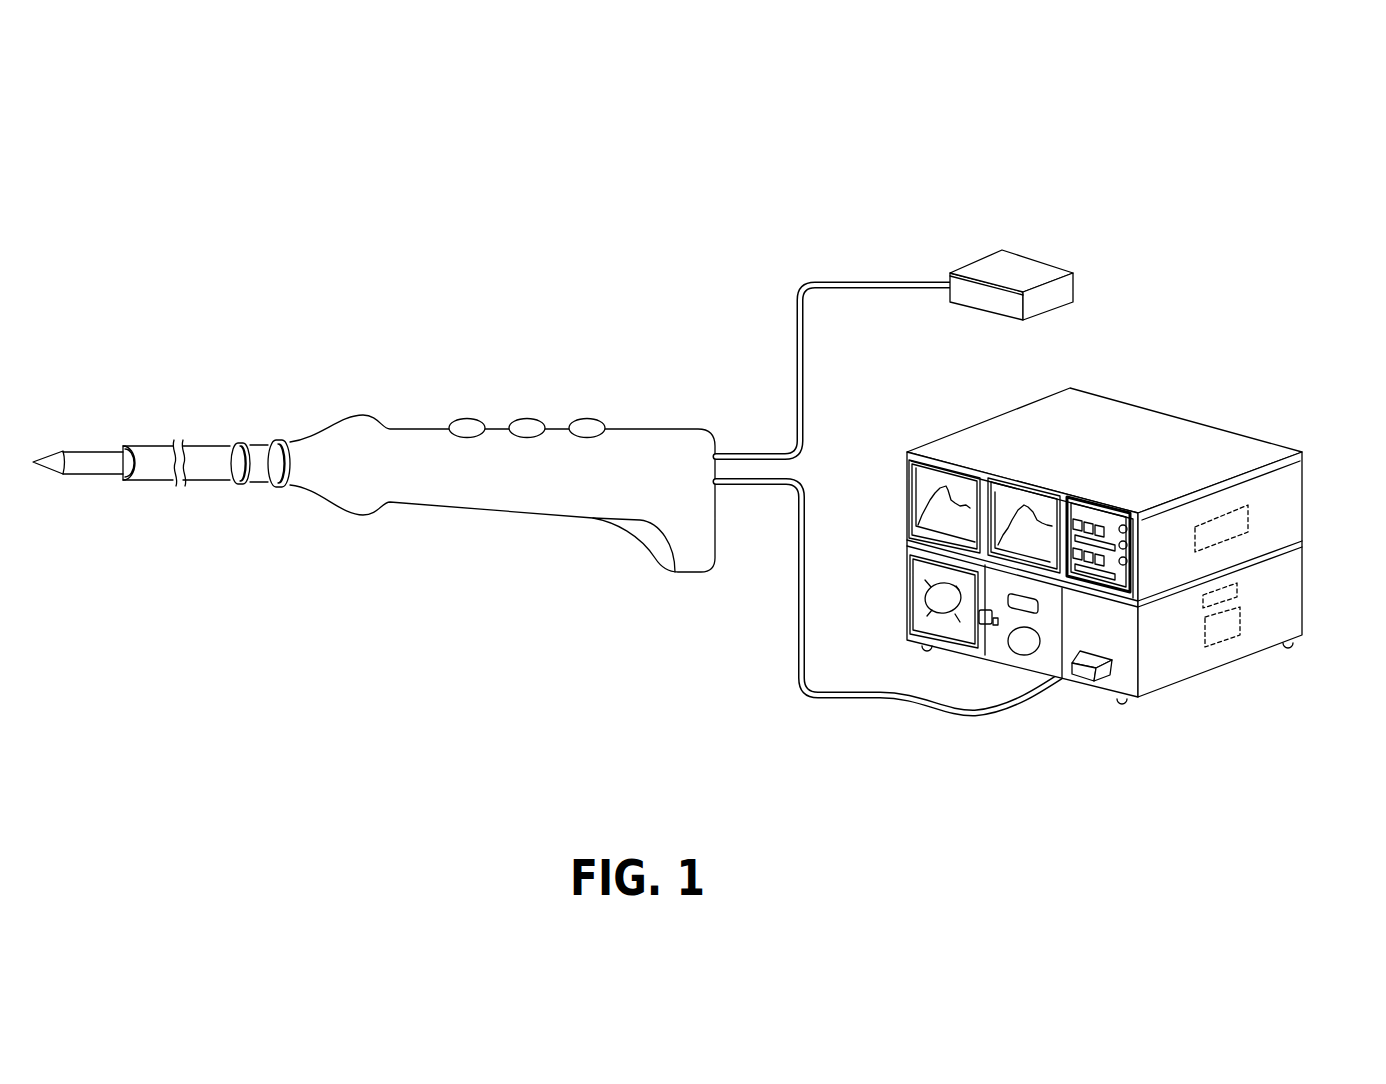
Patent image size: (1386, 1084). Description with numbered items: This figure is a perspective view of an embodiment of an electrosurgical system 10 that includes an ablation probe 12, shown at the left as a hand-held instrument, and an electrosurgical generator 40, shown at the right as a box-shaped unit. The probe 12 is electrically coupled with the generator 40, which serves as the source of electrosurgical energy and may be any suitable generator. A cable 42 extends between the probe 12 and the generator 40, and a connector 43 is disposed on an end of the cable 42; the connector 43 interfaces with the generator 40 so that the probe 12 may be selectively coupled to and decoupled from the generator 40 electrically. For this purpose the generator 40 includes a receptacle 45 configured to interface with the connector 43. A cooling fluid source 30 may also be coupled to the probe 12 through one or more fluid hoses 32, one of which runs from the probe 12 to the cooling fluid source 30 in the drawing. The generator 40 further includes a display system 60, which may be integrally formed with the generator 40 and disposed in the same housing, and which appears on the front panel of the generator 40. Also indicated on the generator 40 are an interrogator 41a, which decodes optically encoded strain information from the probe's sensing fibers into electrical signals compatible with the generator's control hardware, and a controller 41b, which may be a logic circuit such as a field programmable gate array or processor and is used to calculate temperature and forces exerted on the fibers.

The electrosurgical system 10 is at (453, 145).
The ablation probe 12 is at (499, 366).
The cooling fluid source 30 is at (1030, 257).
The fluid hose 32 is at (870, 282).
The electrosurgical generator 40 is at (1229, 387).
The interrogator 41a is at (1240, 625).
The controller 41b is at (1248, 518).
The cable 42 is at (806, 512).
The connector 43 is at (1117, 668).
The receptacle 45 is at (1237, 588).
The display system 60 is at (927, 428).